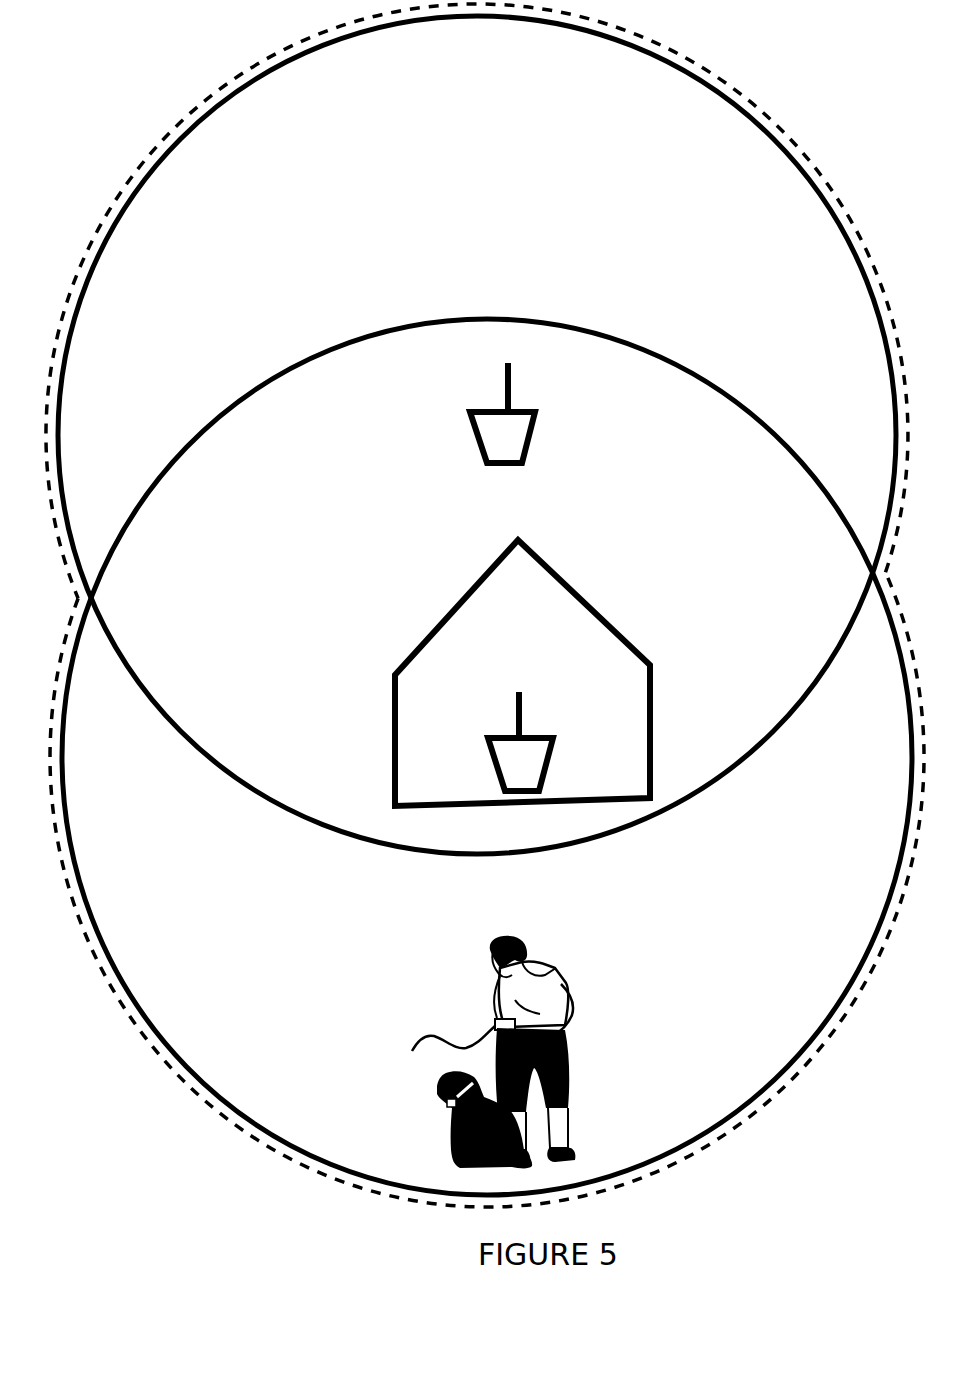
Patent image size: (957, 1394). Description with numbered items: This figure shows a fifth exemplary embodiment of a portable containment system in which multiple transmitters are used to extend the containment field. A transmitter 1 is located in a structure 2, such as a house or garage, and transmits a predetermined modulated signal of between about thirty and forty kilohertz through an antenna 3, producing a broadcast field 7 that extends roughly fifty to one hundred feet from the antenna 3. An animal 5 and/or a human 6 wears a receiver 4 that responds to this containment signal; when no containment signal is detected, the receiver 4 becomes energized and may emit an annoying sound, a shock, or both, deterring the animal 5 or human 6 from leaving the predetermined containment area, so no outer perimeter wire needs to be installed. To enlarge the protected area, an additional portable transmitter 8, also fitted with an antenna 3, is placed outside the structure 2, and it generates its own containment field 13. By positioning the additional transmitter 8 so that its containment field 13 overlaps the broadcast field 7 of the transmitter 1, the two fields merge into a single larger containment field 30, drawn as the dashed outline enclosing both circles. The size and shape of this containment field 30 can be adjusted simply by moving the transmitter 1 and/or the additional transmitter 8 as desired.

The transmitter 1 is at (553, 736).
The structure 2 is at (393, 735).
The antenna 3 is at (506, 383).
The receiver 4 is at (447, 1103).
The animal 5 is at (452, 1125).
The human 6 is at (571, 1129).
The broadcast field 7 is at (408, 321).
The additional portable transmitter 8 is at (537, 408).
The containment field 13 is at (477, 18).
The single larger containment field 30 is at (796, 139).